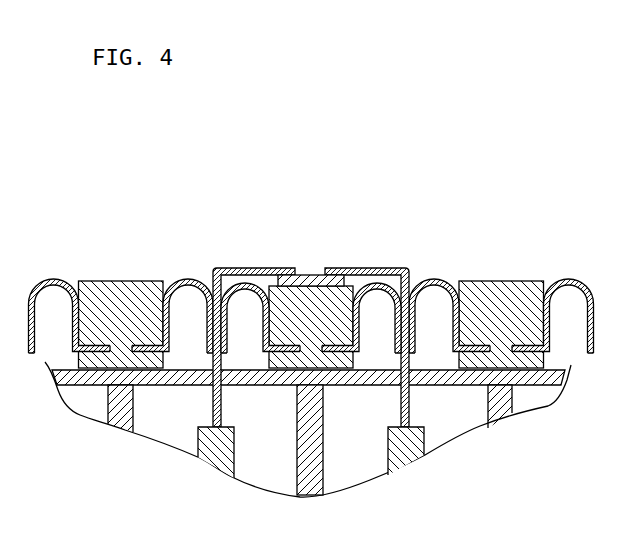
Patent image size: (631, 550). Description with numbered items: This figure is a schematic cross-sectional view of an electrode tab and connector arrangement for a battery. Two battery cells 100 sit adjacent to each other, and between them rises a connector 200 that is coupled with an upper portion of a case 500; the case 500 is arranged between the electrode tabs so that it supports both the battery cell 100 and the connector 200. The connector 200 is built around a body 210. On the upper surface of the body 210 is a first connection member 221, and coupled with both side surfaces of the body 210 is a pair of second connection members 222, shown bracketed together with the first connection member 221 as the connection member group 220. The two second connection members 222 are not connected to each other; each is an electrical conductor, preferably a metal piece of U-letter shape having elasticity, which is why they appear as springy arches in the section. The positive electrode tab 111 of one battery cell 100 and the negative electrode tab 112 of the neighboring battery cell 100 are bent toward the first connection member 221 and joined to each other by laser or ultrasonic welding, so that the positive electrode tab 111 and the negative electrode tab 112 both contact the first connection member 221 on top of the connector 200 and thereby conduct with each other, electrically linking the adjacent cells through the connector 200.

The battery cell 100 is at (195, 447).
The positive electrode tab 111 is at (230, 271).
The negative electrode tab 112 is at (410, 277).
The connector 200 is at (285, 150).
The body 210 is at (388, 275).
The terminal assembly 220 is at (348, 194).
The first connection member 221 is at (304, 276).
The second connection member 222 is at (242, 283).
The case 500 is at (315, 460).